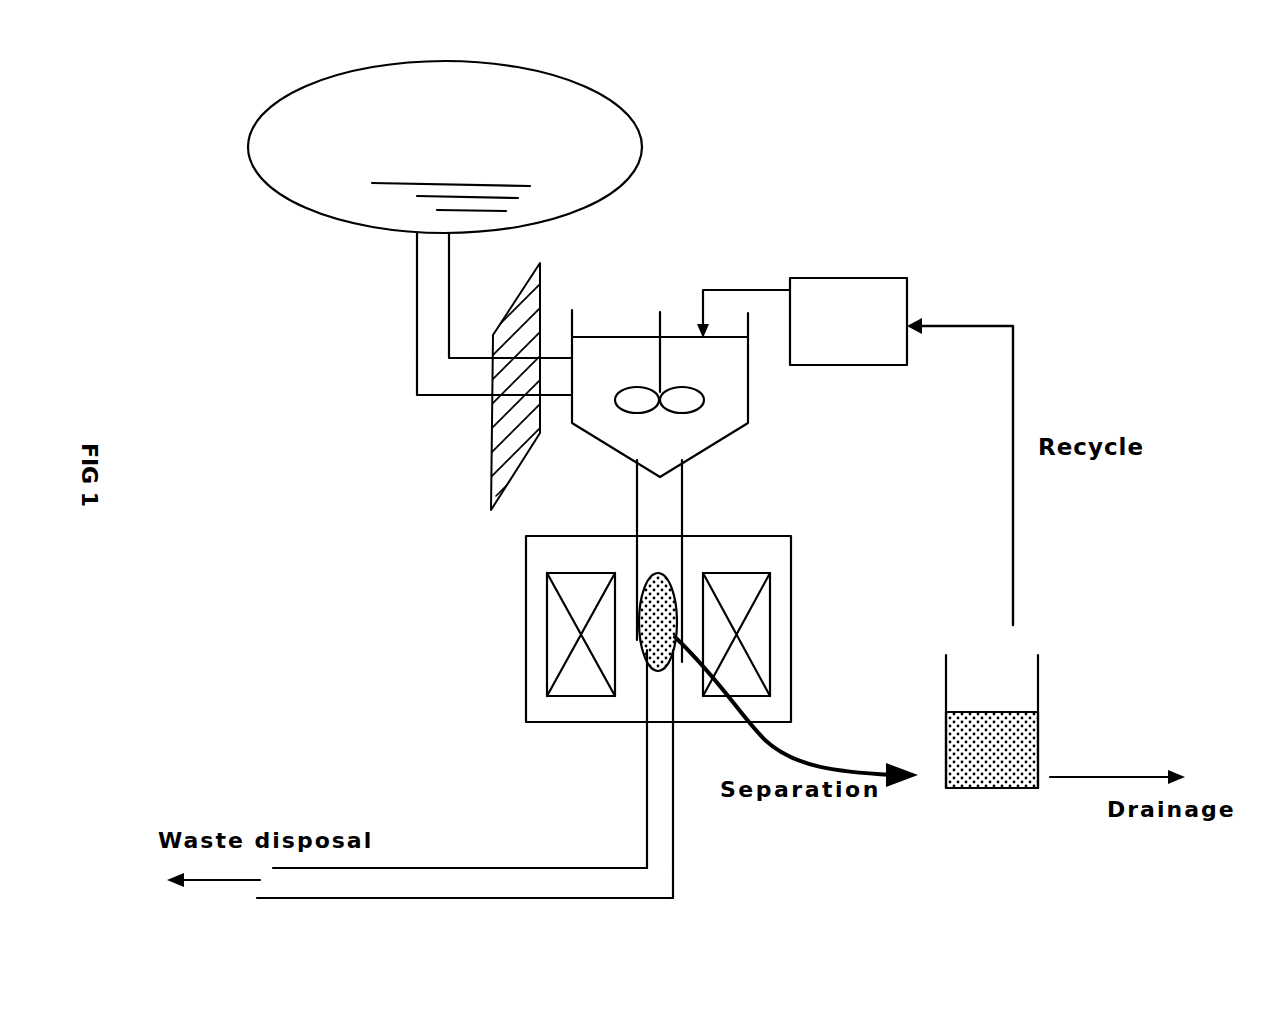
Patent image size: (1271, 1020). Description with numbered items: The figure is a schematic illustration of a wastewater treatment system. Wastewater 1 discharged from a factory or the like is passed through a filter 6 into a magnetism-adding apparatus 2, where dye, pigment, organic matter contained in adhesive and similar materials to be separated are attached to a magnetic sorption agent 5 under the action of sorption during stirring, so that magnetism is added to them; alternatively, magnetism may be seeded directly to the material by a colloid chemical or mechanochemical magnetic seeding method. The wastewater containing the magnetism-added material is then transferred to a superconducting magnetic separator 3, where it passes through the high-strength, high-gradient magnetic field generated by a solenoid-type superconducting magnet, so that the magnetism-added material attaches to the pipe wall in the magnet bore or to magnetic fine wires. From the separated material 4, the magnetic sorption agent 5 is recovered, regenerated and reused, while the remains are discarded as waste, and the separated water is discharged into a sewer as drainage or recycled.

The wastewater 1 is at (500, 110).
The magnetism-adding apparatus 2 is at (748, 410).
The superconducting magnetic separator 3 is at (526, 643).
The separated material 4 is at (990, 760).
The magnetic sorption agent 5 is at (828, 318).
The filter 6 is at (493, 455).